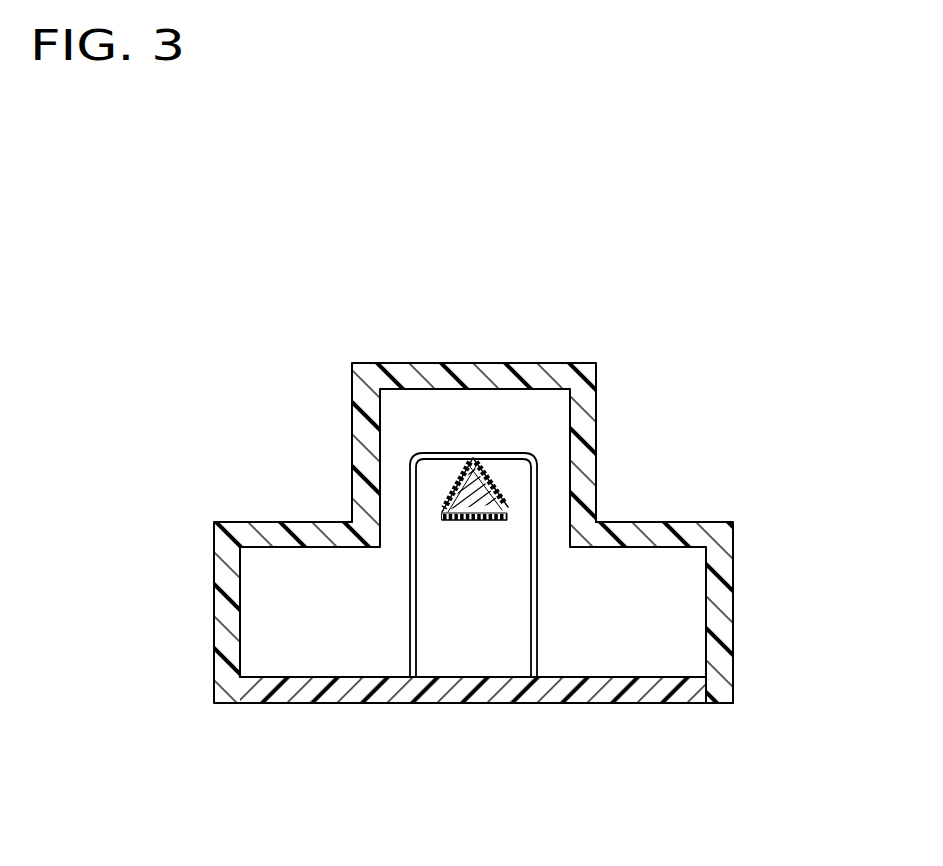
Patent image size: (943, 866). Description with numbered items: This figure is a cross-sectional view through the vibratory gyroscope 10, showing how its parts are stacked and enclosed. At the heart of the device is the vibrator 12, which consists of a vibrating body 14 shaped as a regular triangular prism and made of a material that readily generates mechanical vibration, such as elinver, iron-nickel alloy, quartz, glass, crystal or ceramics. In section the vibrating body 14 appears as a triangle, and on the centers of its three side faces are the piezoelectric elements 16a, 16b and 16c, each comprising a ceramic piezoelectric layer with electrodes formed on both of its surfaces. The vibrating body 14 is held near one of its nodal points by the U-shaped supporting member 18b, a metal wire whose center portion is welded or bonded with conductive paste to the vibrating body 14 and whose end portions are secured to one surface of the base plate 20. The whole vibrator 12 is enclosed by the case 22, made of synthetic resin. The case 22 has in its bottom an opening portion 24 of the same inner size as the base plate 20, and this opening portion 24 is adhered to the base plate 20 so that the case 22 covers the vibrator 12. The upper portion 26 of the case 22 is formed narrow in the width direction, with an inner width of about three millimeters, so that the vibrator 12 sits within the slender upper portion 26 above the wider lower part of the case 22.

The vibratory gyroscope 10 is at (655, 292).
The vibrator 12 is at (495, 532).
The vibrating body 14 is at (447, 514).
The piezoelectric element 16a is at (452, 482).
The piezoelectric element 16b is at (499, 482).
The piezoelectric element 16c is at (458, 523).
The supporting member 18b is at (538, 628).
The base plate 20 is at (473, 704).
The case 22 is at (734, 545).
The opening portion 24 is at (704, 705).
The upper portion 26 is at (592, 422).